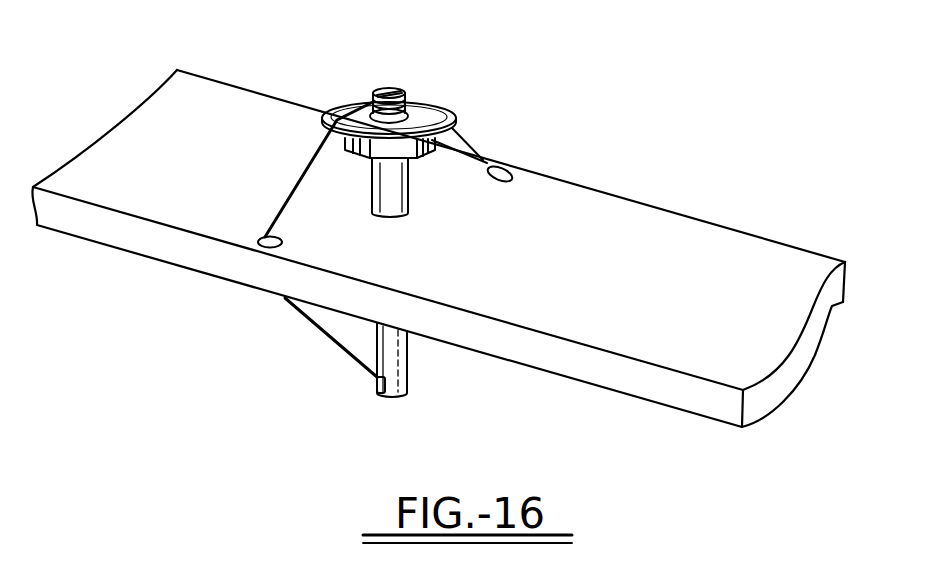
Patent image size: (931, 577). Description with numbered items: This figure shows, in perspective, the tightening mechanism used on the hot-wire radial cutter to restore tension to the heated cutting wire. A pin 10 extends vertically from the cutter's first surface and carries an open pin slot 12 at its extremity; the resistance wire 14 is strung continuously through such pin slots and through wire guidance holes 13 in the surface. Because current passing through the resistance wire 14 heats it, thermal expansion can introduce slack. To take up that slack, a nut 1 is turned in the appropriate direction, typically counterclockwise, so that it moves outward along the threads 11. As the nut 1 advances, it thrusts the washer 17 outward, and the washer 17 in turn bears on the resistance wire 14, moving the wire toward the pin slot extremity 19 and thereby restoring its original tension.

The nut 1 is at (490, 162).
The pin 10 is at (397, 187).
The threads 11 is at (433, 106).
The pin slot 12 is at (377, 398).
The wire guidance hole 13 is at (262, 241).
The resistance wire 14 is at (287, 202).
The washer 17 is at (345, 107).
The pin slot extremity 19 is at (397, 92).